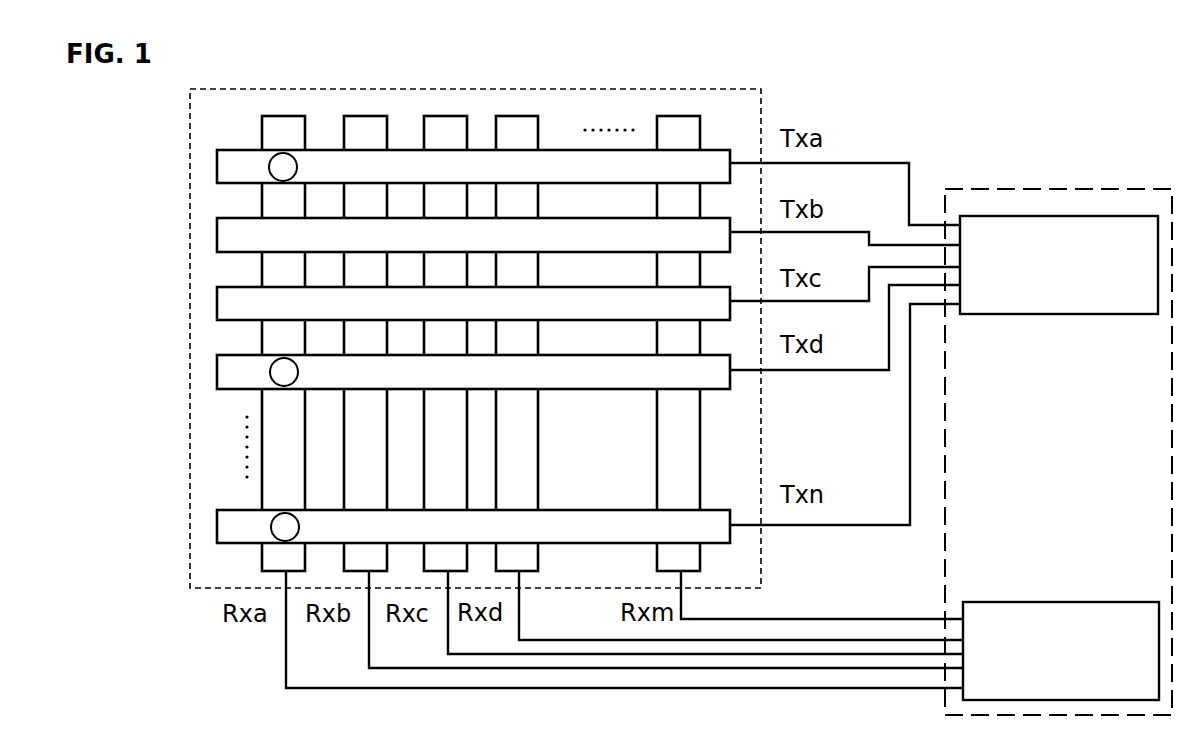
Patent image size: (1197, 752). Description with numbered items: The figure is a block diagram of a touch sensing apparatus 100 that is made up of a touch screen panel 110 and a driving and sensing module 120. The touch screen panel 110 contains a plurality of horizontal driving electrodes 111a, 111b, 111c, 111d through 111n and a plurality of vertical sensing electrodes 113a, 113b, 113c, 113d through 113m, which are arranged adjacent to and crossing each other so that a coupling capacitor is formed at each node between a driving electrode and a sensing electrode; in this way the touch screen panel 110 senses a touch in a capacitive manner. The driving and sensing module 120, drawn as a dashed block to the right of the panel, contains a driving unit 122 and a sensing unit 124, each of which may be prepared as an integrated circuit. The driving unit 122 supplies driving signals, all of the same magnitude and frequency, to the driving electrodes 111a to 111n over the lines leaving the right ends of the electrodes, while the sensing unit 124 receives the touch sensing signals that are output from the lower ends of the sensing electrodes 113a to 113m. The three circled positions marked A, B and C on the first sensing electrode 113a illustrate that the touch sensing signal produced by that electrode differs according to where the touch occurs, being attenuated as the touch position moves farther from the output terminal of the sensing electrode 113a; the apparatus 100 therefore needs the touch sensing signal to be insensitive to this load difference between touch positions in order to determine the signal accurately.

The touch sensing apparatus 100 is at (978, 97).
The touch screen panel 110 is at (761, 89).
The driving electrode 111a is at (217, 166).
The driving electrode 111b is at (217, 234).
The driving electrode 111c is at (217, 302).
The driving electrode 111d is at (217, 370).
The driving electrode 111n is at (217, 526).
The sensing electrode 113a is at (282, 115).
The sensing electrode 113b is at (366, 115).
The sensing electrode 113c is at (455, 115).
The sensing electrode 113d is at (517, 115).
The sensing electrode 113m is at (677, 115).
The driving and sensing module 120 is at (1095, 188).
The driving unit 122 is at (1059, 265).
The sensing unit 124 is at (1061, 651).